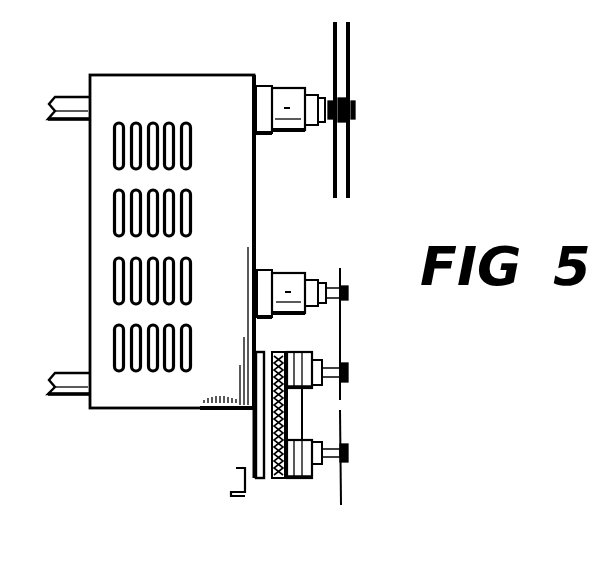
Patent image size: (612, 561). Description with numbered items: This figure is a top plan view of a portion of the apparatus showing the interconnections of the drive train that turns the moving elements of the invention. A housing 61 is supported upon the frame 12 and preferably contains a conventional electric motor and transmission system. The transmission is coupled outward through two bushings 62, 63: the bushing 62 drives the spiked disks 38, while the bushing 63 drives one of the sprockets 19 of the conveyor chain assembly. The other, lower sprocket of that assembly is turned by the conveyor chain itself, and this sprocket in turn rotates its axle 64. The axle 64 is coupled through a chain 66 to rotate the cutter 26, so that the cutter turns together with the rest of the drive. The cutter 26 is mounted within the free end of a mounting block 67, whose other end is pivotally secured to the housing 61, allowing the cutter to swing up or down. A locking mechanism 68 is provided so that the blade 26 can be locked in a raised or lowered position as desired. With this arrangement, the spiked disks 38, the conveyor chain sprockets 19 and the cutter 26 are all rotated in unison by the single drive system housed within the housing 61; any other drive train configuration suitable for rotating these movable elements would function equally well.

The frame 12 is at (71, 103).
The housing 61 is at (199, 80).
The bushing 62 is at (291, 85).
The spiked disks 38 is at (350, 38).
The bushing 63 is at (281, 275).
The sprocket 19 is at (343, 271).
The axle 64 is at (325, 383).
The rotating cutter 26 is at (343, 430).
The mounting block 67 is at (258, 420).
The locking mechanism 68 is at (236, 471).
The chain 66 is at (282, 480).